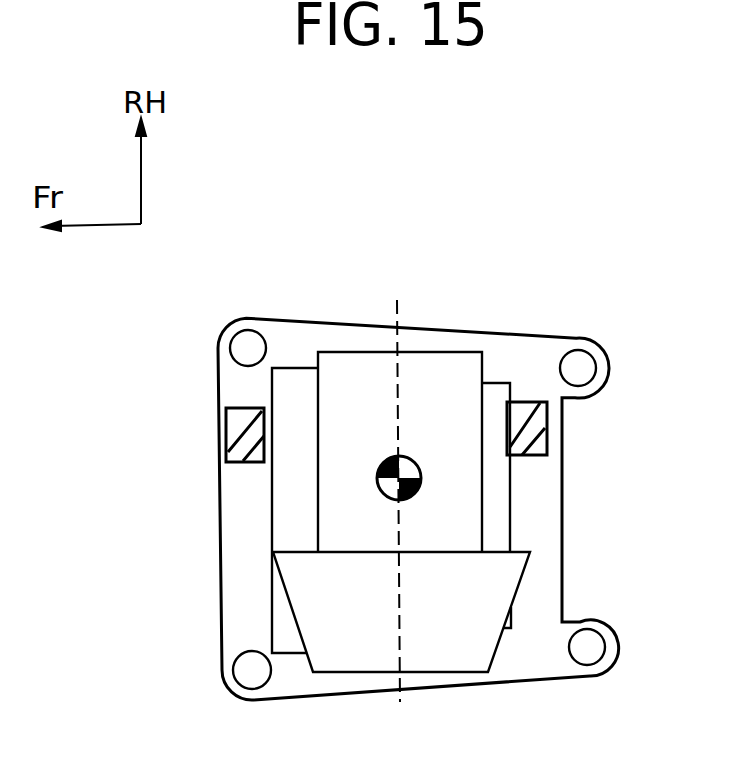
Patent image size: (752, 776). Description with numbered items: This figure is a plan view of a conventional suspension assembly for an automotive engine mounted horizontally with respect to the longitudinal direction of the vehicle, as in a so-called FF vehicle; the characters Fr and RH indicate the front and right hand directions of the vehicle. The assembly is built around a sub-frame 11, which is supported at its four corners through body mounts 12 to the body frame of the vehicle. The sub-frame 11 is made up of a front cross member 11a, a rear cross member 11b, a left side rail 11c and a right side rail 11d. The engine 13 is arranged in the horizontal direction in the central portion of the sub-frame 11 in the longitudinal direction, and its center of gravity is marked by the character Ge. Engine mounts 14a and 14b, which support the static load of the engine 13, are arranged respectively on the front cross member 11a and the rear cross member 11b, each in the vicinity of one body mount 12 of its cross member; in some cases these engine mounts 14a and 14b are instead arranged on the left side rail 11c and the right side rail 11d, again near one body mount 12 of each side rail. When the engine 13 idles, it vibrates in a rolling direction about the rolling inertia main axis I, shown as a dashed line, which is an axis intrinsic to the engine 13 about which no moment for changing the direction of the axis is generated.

The sub-frame 11 is at (310, 322).
The front cross member 11a is at (240, 590).
The rear cross member 11b is at (548, 570).
The left side rail 11c is at (503, 663).
The right side rail 11d is at (428, 342).
The body mount 12 is at (245, 347).
The engine 13 is at (483, 482).
The engine mount 14a is at (226, 427).
The engine mount 14b is at (547, 410).
The center of gravity of the engine Ge is at (376, 487).
The rolling inertia main axis I is at (397, 322).